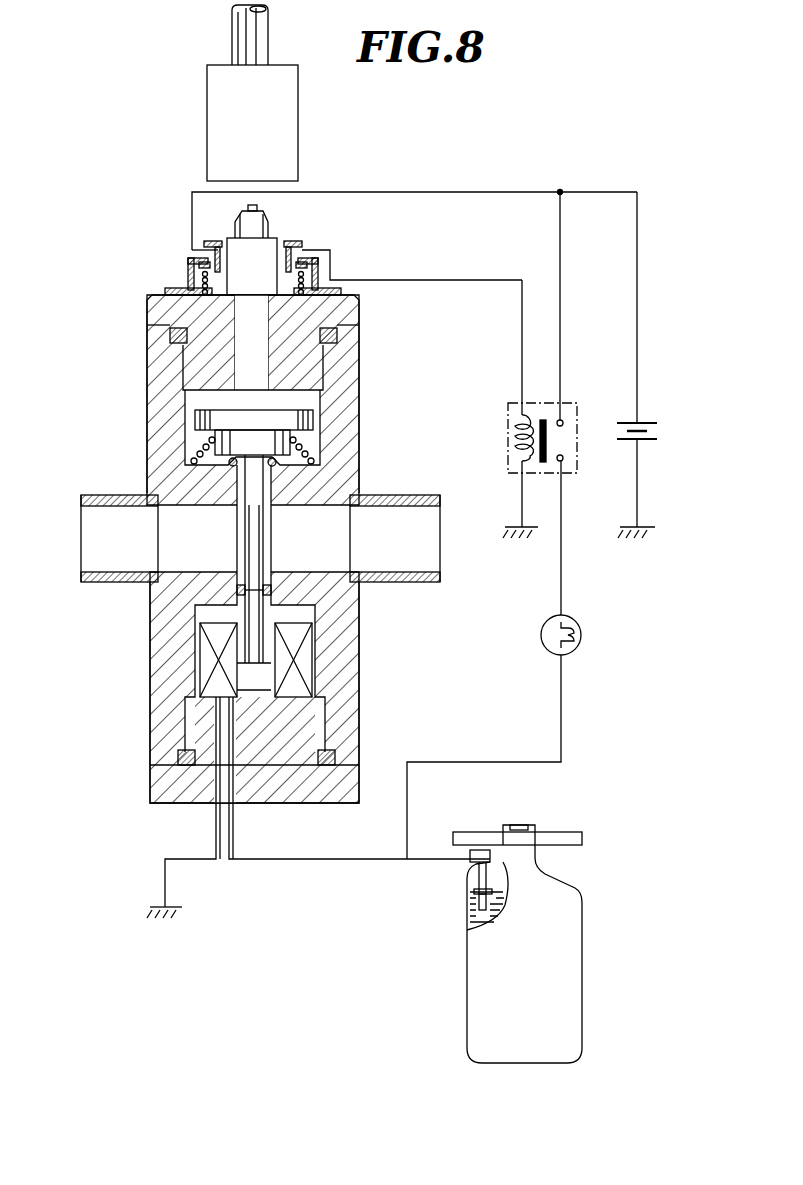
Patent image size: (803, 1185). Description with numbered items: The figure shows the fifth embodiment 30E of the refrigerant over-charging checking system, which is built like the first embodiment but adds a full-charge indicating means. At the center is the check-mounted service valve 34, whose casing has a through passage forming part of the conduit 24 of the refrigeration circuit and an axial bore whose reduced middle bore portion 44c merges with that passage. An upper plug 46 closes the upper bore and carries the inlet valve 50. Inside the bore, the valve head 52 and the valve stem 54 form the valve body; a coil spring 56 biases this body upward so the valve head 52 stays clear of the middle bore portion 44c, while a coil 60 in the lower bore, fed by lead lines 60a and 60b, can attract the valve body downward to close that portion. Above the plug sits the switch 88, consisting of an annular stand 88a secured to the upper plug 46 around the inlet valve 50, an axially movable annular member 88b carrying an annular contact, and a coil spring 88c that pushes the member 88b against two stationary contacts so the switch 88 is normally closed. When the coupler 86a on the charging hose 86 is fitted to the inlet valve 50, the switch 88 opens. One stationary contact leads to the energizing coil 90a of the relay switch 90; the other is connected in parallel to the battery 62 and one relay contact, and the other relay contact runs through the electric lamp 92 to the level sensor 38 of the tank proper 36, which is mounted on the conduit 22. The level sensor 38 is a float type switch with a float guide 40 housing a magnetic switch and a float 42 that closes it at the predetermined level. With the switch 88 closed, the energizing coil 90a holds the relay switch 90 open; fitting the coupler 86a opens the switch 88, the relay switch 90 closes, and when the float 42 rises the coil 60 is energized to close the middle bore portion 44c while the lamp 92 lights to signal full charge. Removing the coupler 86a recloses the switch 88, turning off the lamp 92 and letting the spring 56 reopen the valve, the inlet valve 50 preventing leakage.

The charging hose 86 is at (243, 37).
The coupler 86a is at (298, 131).
The switch 88 is at (372, 253).
The annular stand 88a is at (190, 278).
The annular member 88b is at (204, 243).
The coil spring 88c is at (332, 313).
The inlet valve 50 is at (273, 223).
The upper plug 46 is at (162, 316).
The check-mounted service valve 34 is at (387, 430).
The valve head 52 is at (315, 418).
The coil spring 56 is at (318, 452).
The conduit 24 is at (121, 496).
The valve stem 54 is at (250, 539).
The reduced middle bore portion 44c is at (262, 530).
The coil 60 is at (305, 657).
The lead line 60a is at (302, 862).
The lead line 60b is at (205, 862).
The relay switch 90 is at (516, 365).
The energizing coil 90a is at (515, 450).
The battery 62 is at (650, 432).
The electric lamp 92 is at (600, 610).
The fifth embodiment 30E is at (646, 762).
The conduit 22 is at (560, 840).
The level sensor 38 is at (481, 849).
The tank proper 36 is at (565, 955).
The float guide 40 is at (505, 882).
The float 42 is at (505, 908).